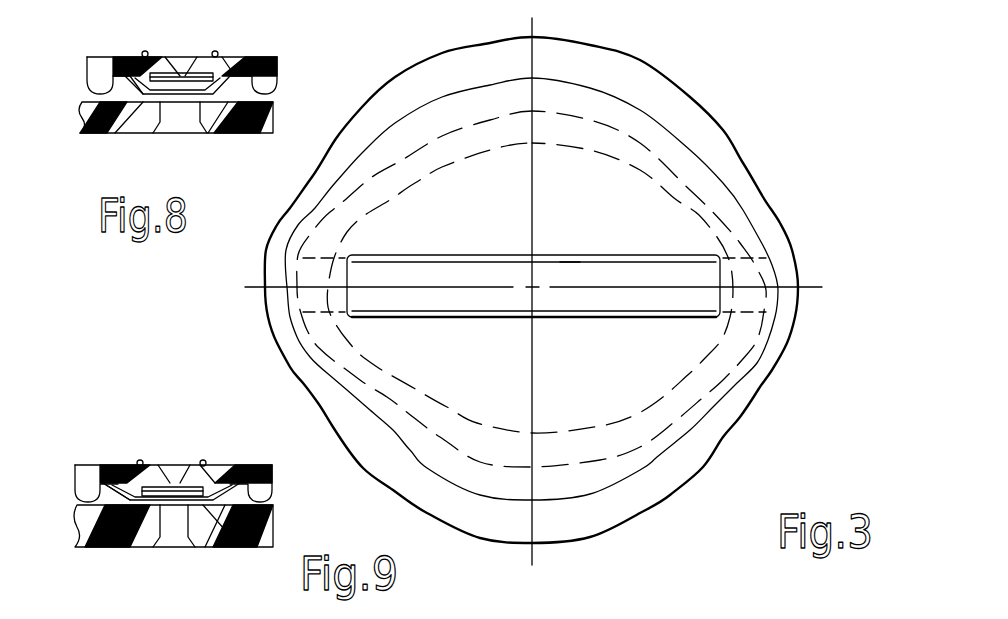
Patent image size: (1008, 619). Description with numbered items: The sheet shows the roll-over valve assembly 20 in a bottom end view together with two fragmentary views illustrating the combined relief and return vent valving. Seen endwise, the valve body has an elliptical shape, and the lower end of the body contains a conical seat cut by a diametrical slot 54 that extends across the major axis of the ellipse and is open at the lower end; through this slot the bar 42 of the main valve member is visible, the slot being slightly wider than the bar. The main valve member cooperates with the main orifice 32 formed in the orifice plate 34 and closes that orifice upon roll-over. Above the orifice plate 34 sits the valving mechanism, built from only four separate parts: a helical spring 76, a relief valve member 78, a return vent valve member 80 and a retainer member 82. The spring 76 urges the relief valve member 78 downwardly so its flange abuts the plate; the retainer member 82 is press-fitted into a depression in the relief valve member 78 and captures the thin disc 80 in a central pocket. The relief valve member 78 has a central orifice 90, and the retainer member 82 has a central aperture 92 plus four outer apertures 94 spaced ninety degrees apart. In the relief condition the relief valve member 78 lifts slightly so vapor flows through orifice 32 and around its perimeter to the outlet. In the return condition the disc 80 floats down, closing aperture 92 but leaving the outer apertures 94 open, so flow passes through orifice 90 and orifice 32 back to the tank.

In FIG. 3, the roll-over valve assembly 20 is at (760, 123).
In FIG. 8, the main orifice 32 is at (192, 114).
In FIG. 9, the main orifice 32 is at (174, 540).
In FIG. 8, the orifice plate 34 is at (278, 106).
In FIG. 9, the orifice plate 34 is at (276, 518).
In FIG. 3, the bar 42 is at (419, 297).
In FIG. 3, the diametrical slot 54 is at (562, 266).
In FIG. 8, the helical spring 76 is at (218, 56).
In FIG. 9, the helical spring 76 is at (206, 462).
In FIG. 8, the relief valve member 78 is at (278, 62).
In FIG. 9, the relief valve member 78 is at (272, 468).
In FIG. 8, the return vent valve member 80 is at (178, 73).
In FIG. 9, the return vent valve member 80 is at (180, 482).
In FIG. 8, the retainer member 82 is at (137, 92).
In FIG. 9, the retainer member 82 is at (197, 545).
In FIG. 8, the central circular orifice 90 is at (173, 57).
In FIG. 9, the central circular orifice 90 is at (168, 465).
In FIG. 9, the central circular aperture 92 is at (142, 546).
In FIG. 9, the outer apertures 94 is at (115, 548).